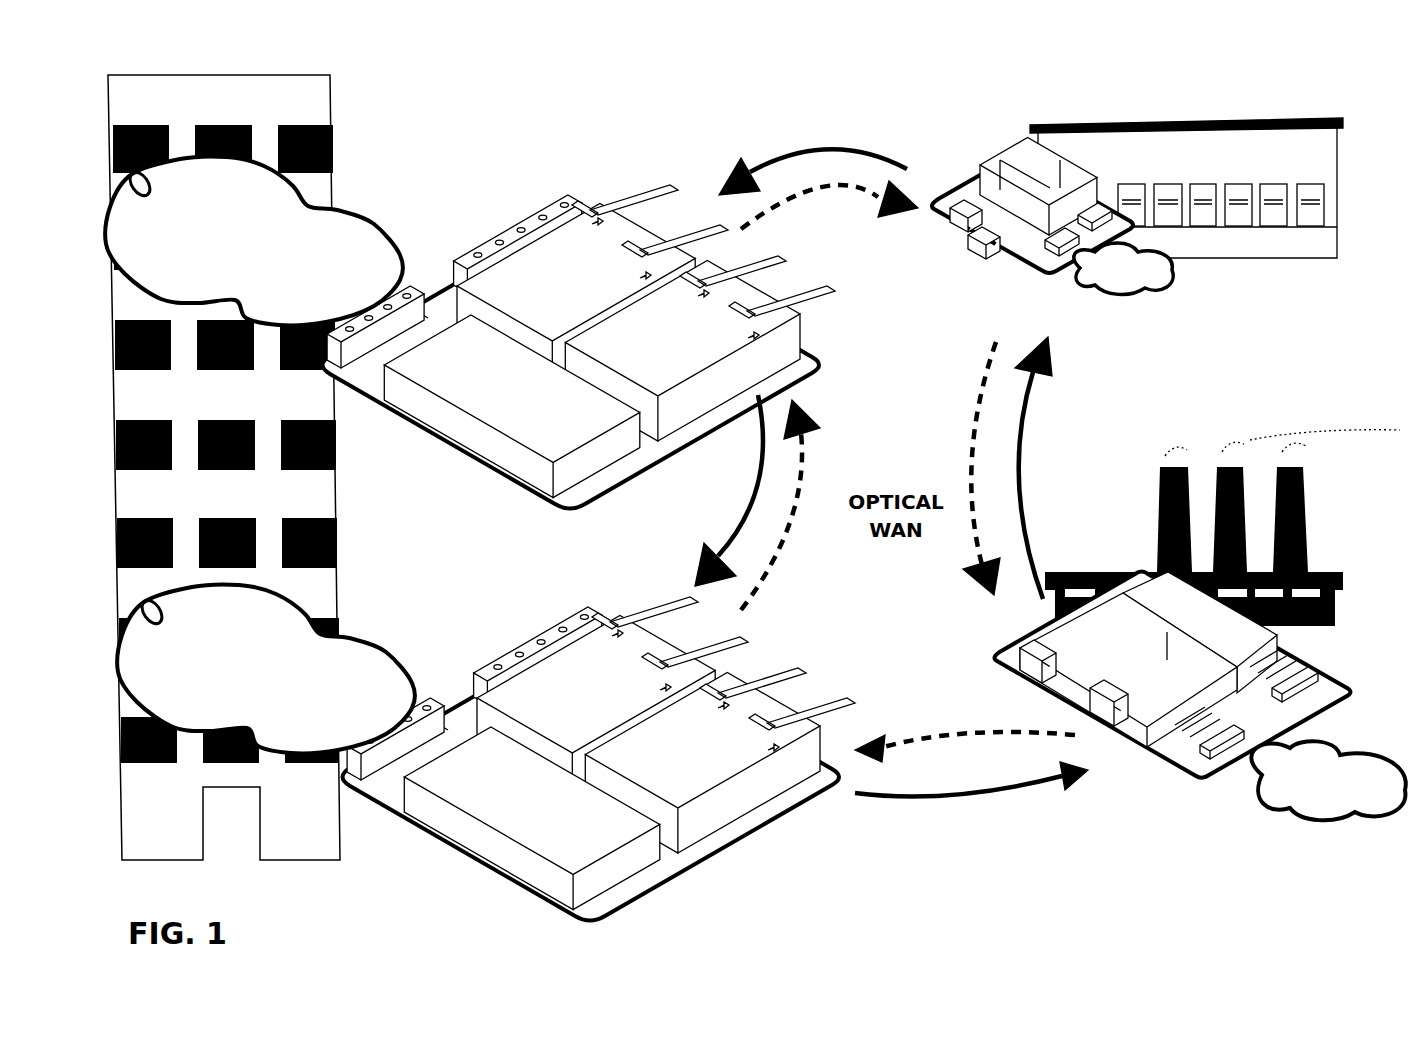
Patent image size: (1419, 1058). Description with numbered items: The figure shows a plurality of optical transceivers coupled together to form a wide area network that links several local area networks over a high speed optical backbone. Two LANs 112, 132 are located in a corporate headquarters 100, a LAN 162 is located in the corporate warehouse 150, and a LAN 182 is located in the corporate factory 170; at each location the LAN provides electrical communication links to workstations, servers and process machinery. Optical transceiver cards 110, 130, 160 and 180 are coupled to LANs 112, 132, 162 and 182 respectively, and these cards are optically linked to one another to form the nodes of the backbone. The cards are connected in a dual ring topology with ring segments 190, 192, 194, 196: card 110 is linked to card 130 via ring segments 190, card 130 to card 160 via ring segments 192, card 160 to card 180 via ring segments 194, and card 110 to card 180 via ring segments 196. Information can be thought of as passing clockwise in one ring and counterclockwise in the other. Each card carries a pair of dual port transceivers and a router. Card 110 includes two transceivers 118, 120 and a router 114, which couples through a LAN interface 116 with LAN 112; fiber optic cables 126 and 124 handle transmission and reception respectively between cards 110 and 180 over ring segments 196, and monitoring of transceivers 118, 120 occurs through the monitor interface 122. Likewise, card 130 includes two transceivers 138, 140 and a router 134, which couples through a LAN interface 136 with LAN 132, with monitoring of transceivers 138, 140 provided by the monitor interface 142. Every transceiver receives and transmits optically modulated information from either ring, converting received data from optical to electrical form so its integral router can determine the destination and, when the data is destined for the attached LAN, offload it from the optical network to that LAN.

The corporate headquarters 100 is at (283, 860).
The optical transceiver card 110 is at (630, 755).
The LAN 112 is at (362, 652).
The router 114 is at (463, 800).
The LAN interface 116 is at (423, 710).
The transceiver 118 is at (751, 747).
The transceiver 120 is at (590, 690).
The monitor interface 122 is at (520, 643).
The fiber optic cable 124 is at (832, 712).
The fiber optic cable 126 is at (796, 688).
The optical transceiver card 130 is at (579, 368).
The LAN 132 is at (353, 227).
The router 134 is at (512, 406).
The LAN interface 136 is at (389, 300).
The transceiver 138 is at (700, 348).
The transceiver 140 is at (592, 290).
The monitor interface 142 is at (518, 235).
The corporate warehouse 150 is at (1245, 122).
The optical transceiver card 160 is at (1036, 276).
The LAN 162 is at (1165, 278).
The corporate factory 170 is at (1172, 456).
The optical transceiver card 180 is at (1210, 788).
The LAN 182 is at (1360, 808).
The ring segments 190 is at (757, 502).
The ring segments 192 is at (818, 189).
The ring segments 194 is at (1007, 468).
The ring segments 196 is at (971, 764).